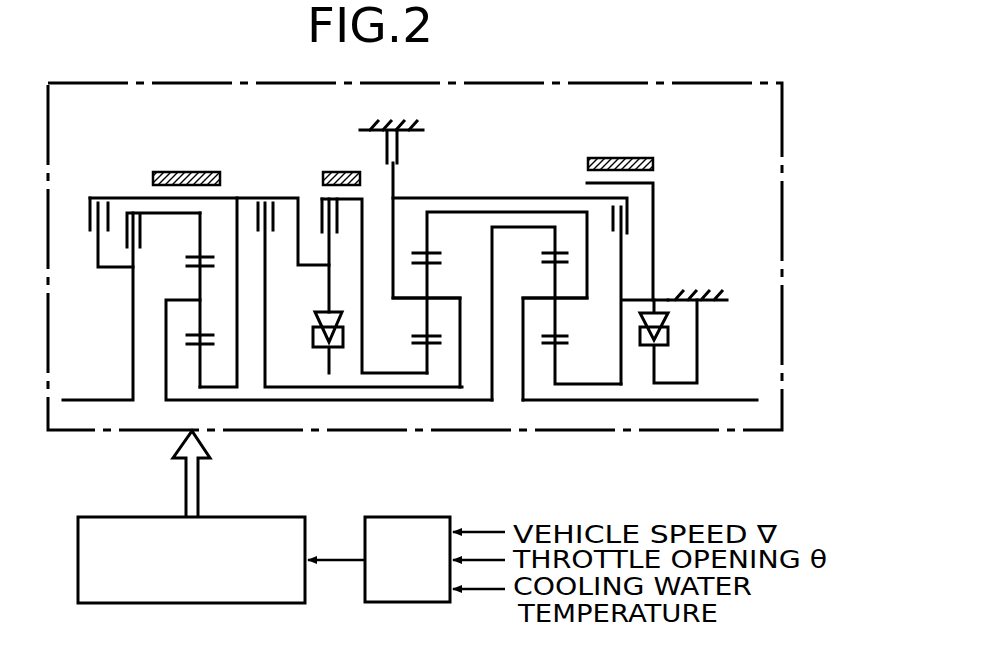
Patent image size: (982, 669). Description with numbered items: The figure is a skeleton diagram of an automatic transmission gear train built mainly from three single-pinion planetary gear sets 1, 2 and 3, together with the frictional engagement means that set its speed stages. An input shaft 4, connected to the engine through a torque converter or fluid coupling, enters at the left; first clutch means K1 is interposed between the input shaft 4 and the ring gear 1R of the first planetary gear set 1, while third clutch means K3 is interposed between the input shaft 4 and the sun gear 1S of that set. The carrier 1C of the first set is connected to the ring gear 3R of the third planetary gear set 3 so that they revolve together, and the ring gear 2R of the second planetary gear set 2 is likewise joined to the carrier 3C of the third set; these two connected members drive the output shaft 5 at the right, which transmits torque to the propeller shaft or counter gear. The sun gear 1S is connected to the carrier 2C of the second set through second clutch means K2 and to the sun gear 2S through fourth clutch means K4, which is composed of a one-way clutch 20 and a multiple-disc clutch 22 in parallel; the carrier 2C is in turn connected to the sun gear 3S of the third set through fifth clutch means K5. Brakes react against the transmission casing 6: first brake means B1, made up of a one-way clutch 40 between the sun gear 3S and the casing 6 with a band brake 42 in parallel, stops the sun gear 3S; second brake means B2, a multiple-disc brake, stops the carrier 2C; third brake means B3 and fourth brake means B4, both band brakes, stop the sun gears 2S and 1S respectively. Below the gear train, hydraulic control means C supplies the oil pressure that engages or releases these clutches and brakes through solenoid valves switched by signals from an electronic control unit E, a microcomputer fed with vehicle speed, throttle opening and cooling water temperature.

The first planetary gear set 1 is at (187, 387).
The second planetary gear set 2 is at (433, 379).
The third planetary gear set 3 is at (566, 390).
The input shaft 4 is at (93, 400).
The output shaft 5 is at (718, 400).
The transmission casing 6 is at (398, 125).
The one-way clutch 20 is at (323, 315).
The multiple-disc clutch 22 is at (321, 212).
The one-way clutch 40 is at (654, 311).
The band brake 42 is at (624, 158).
The first brake means B1 is at (662, 163).
The second brake means B2 is at (410, 239).
The third brake means B3 is at (341, 166).
The fourth brake means B4 is at (186, 167).
The first clutch means K1 is at (163, 232).
The second clutch means K2 is at (357, 280).
The third clutch means K3 is at (109, 222).
The fourth clutch means K4 is at (339, 218).
The fifth clutch means K5 is at (640, 295).
The ring gear 1R is at (207, 247).
The carrier 1C is at (323, 338).
The sun gear 1S is at (207, 353).
The ring gear 2R is at (437, 246).
The carrier 2C is at (429, 288).
The sun gear 2S is at (434, 352).
The ring gear 3R is at (539, 246).
The carrier 3C is at (550, 288).
The sun gear 3S is at (568, 352).
The hydraulic control means C is at (171, 603).
The electronic control unit E is at (408, 602).